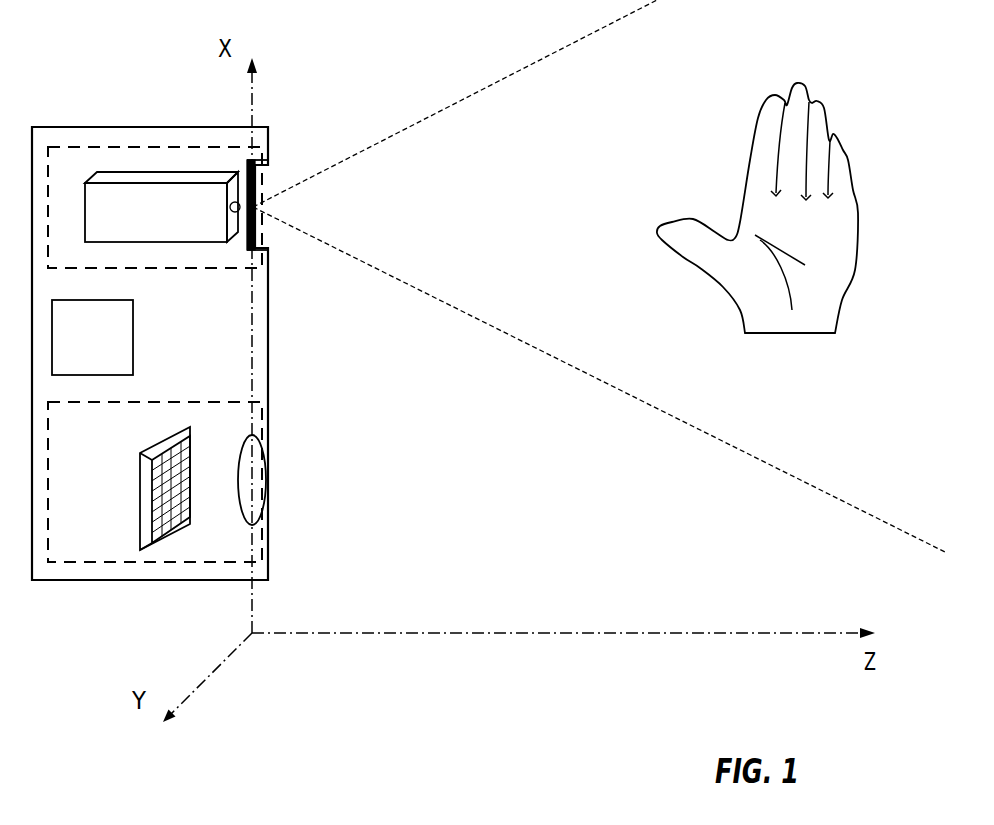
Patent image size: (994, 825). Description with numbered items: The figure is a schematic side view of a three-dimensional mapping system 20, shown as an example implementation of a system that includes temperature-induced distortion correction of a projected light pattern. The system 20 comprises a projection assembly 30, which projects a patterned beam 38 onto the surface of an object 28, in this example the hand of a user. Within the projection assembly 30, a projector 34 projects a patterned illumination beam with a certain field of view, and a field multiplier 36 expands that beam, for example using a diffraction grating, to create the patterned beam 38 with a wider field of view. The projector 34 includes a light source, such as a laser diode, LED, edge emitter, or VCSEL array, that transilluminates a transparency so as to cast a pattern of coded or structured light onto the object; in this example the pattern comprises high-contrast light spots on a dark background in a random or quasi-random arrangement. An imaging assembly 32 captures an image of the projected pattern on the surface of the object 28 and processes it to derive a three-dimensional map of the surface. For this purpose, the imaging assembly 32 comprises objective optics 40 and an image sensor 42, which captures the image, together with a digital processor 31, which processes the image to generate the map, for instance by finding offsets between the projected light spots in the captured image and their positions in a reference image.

The 3D mapping system 20 is at (52, 125).
The object 28 is at (848, 155).
The projection assembly 30 is at (108, 146).
The digital processor 31 is at (133, 338).
The imaging assembly 32 is at (90, 562).
The projector 34 is at (172, 170).
The field multiplier 36 is at (248, 250).
The patterned beam 38 is at (580, 43).
The objective optics 40 is at (266, 458).
The image sensor 42 is at (140, 460).